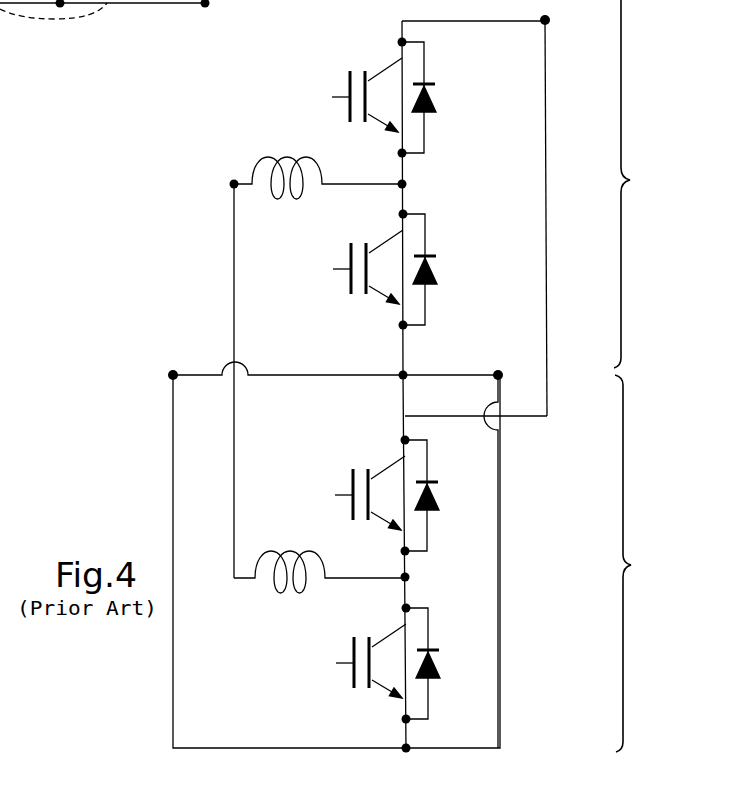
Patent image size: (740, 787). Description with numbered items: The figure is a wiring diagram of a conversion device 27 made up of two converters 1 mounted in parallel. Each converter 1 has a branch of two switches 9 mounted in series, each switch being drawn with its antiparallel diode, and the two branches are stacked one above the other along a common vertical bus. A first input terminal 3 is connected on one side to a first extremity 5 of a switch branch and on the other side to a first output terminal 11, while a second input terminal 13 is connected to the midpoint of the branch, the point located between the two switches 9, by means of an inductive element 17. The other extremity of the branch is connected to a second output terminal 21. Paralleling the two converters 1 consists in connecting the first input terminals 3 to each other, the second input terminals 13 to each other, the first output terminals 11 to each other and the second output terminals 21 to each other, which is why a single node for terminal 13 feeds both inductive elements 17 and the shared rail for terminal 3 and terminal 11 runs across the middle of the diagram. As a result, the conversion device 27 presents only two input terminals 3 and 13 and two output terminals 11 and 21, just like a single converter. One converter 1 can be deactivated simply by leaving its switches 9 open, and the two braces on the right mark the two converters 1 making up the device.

The converter 1 is at (633, 376).
The first input terminal 3 is at (173, 376).
The first extremity 5 is at (60, 5).
The switch 9 is at (441, 101).
The first output terminal 11 is at (498, 370).
The second input terminal 13 is at (234, 184).
The inductive element 17 is at (280, 157).
The second output terminal 21 is at (549, 21).
The conversion device 27 is at (122, 278).